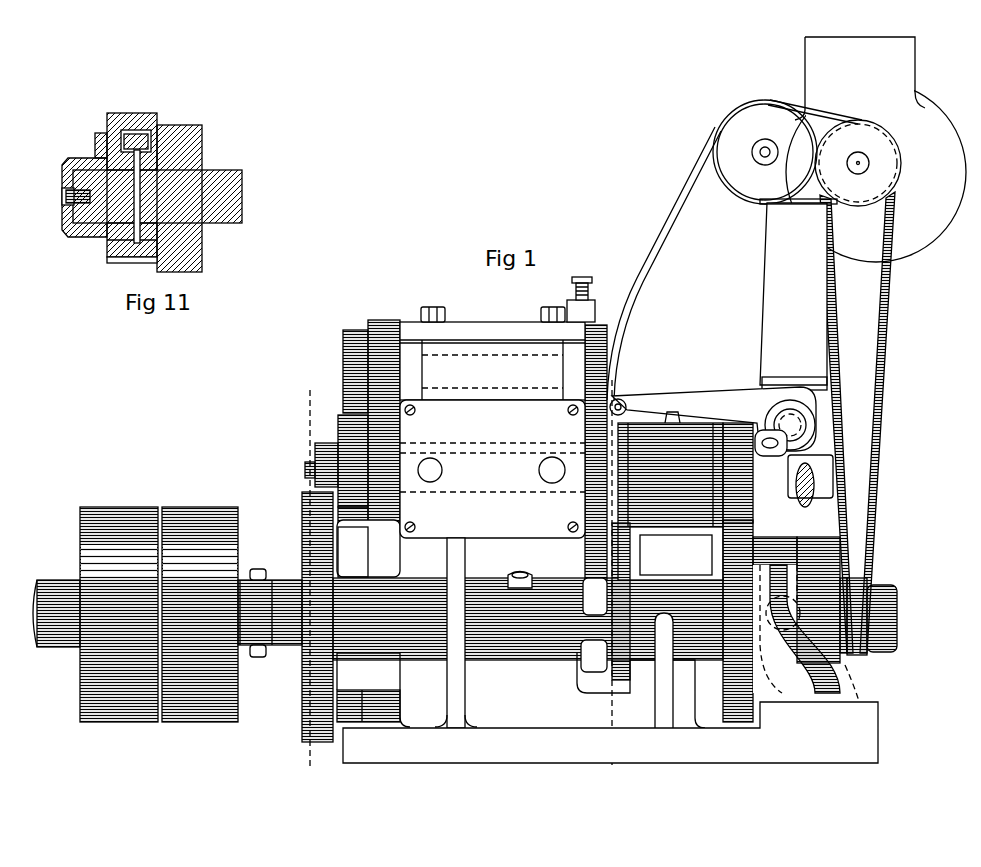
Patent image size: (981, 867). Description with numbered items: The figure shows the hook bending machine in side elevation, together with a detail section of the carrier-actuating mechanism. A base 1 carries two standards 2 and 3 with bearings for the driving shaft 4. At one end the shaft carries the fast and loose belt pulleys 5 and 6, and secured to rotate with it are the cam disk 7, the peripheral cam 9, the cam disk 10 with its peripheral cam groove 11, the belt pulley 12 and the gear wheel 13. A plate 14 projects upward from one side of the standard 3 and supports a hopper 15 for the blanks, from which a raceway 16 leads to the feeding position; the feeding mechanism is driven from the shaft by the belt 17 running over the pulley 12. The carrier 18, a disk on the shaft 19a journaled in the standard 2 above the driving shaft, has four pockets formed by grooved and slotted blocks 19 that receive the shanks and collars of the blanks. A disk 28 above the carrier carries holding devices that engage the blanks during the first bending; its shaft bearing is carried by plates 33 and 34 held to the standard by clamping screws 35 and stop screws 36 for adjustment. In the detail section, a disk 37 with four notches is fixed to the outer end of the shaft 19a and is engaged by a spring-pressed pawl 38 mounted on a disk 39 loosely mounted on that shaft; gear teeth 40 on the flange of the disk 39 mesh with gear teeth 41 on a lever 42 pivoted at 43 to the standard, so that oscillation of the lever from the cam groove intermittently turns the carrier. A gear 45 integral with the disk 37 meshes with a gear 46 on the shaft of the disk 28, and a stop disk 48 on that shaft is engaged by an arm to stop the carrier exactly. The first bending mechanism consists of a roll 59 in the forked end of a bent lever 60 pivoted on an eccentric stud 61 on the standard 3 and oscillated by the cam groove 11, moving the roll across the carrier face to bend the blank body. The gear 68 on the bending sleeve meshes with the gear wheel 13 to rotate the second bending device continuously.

In FIG. 1, the base 1 is at (480, 752).
In FIG. 1, the standard 2 is at (504, 582).
In FIG. 1, the standard 3 is at (688, 682).
In FIG. 1, the driving shaft 4 is at (37, 638).
In FIG. 1, the fast belt pulley 5 is at (118, 508).
In FIG. 1, the loose belt pulley 6 is at (172, 508).
In FIG. 1, the cam disk 7 is at (303, 680).
In FIG. 1, the peripheral cam 9 is at (629, 567).
In FIG. 1, the cam disk 10 is at (830, 552).
In FIG. 1, the cam groove 11 is at (815, 680).
In FIG. 1, the belt pulley 12 is at (869, 584).
In FIG. 1, the gear wheel 13 is at (744, 724).
In FIG. 1, the plate 14 is at (798, 294).
In FIG. 1, the hopper 15 is at (957, 127).
In FIG. 1, the raceway 16 is at (668, 240).
In FIG. 1, the belt 17 is at (876, 435).
In FIG. 1, the carrier 18 is at (568, 516).
In FIG. 1, the block 19 is at (585, 472).
In FIG. 1, the shaft 19a is at (316, 462).
In FIG. 11, the shaft 19a is at (240, 190).
In FIG. 1, the disk 28 is at (583, 367).
In FIG. 1, the plate 33 is at (490, 326).
In FIG. 1, the plate 34 is at (492, 469).
In FIG. 1, the clamping screw 35 is at (443, 310).
In FIG. 1, the stop screw 36 is at (416, 410).
In FIG. 11, the disk 37 is at (118, 258).
In FIG. 11, the spring-pressed pawl 38 is at (137, 130).
In FIG. 1, the disk 39 is at (338, 440).
In FIG. 11, the disk 39 is at (107, 118).
In FIG. 11, the gear teeth 40 is at (107, 255).
In FIG. 1, the gear teeth 41 is at (366, 527).
In FIG. 1, the lever 42 is at (356, 562).
In FIG. 1, the pivot 43 is at (366, 692).
In FIG. 1, the gear 45 is at (442, 470).
In FIG. 11, the gear 45 is at (202, 256).
In FIG. 1, the gear 46 is at (380, 320).
In FIG. 1, the stop disk 48 is at (343, 347).
In FIG. 1, the roll 59 is at (621, 398).
In FIG. 1, the bent lever 60 is at (814, 527).
In FIG. 1, the stud 61 is at (802, 428).
In FIG. 1, the gear 68 is at (736, 425).